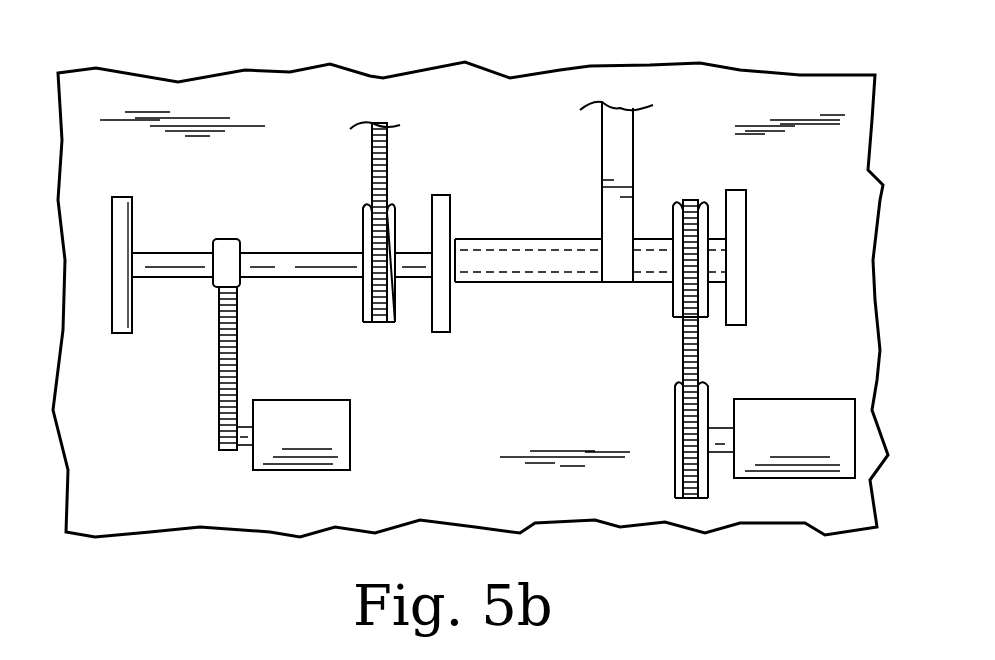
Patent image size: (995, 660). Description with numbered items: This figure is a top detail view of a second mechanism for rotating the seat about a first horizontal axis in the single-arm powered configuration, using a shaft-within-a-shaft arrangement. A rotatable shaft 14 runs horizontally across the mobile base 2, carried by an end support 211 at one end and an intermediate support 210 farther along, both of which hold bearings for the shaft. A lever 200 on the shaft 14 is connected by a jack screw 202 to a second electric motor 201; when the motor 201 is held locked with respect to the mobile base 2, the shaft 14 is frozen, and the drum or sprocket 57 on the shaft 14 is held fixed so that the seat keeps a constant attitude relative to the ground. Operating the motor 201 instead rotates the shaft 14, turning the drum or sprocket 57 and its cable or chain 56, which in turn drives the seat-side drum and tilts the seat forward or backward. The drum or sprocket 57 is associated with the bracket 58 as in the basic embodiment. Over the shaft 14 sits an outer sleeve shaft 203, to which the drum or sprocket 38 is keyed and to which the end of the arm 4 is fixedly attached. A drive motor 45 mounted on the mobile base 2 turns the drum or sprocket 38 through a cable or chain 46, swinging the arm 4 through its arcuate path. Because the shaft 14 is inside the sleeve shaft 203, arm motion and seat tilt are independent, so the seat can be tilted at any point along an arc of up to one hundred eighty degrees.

The mobile base 2 is at (242, 92).
The arm 4 is at (625, 137).
The rotatable shaft 14 is at (303, 278).
The drum or sprocket 38 is at (672, 310).
The drive motor 45 is at (810, 398).
The cable or chain 46 is at (700, 345).
The cable or chain 56 is at (388, 150).
The drum or sprocket 57 is at (362, 222).
The bracket 58 is at (747, 228).
The lever 200 is at (222, 237).
The second electric motor 201 is at (350, 430).
The jack screw 202 is at (240, 362).
The outer sleeve shaft 203 is at (527, 238).
The intermediate support 210 is at (452, 317).
The end support 211 is at (122, 332).